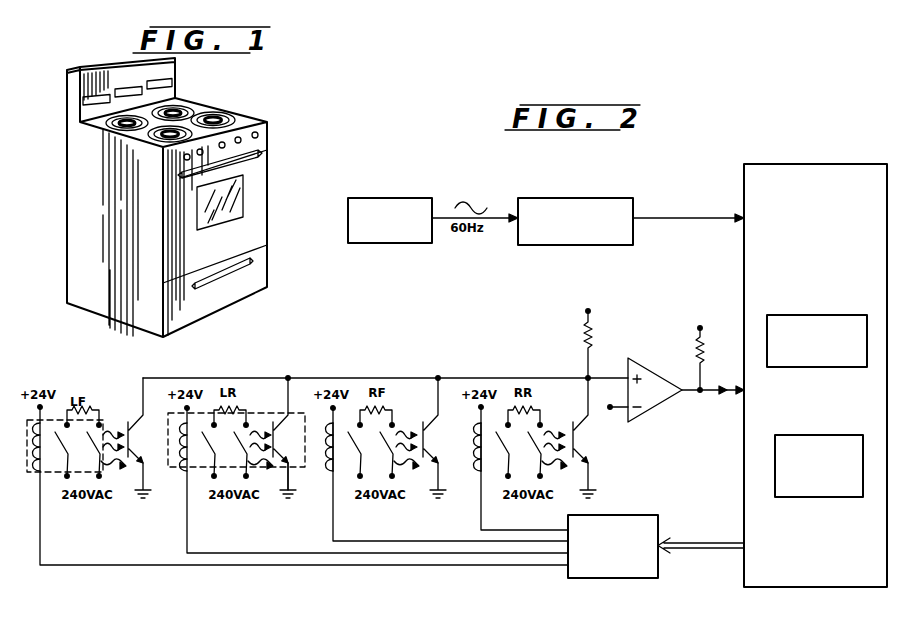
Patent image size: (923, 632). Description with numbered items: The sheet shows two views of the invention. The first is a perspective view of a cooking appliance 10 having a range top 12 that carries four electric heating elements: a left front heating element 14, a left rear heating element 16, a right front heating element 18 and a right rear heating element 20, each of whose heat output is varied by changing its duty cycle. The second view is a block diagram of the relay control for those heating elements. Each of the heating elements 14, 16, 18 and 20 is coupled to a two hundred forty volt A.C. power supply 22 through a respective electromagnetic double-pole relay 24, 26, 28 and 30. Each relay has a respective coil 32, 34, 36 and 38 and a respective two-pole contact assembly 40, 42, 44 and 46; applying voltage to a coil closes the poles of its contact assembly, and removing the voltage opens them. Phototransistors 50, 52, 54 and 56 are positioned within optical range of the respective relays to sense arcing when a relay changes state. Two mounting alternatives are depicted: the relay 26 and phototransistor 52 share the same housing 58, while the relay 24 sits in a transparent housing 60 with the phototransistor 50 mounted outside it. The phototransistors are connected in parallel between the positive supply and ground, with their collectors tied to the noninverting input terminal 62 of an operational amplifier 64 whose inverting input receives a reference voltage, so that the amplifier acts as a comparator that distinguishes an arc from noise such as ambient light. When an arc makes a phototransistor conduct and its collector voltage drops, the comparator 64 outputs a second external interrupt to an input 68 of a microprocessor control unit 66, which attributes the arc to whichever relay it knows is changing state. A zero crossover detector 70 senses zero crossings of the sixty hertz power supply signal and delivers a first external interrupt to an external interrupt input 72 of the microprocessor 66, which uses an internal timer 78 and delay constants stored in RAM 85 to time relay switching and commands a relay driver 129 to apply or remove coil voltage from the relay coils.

In FIG. 1, the cooking appliance 10 is at (194, 197).
In FIG. 1, the range top 12 is at (248, 115).
In FIG. 1, the left front heating element 14 is at (146, 138).
In FIG. 2, the left front heating element 14 is at (50, 411).
In FIG. 1, the left rear heating element 16 is at (110, 128).
In FIG. 2, the left rear heating element 16 is at (243, 405).
In FIG. 1, the right front heating element 18 is at (223, 116).
In FIG. 2, the right front heating element 18 is at (390, 405).
In FIG. 1, the right rear heating element 20 is at (178, 105).
In FIG. 2, the right rear heating element 20 is at (537, 404).
In FIG. 2, the power supply 22 is at (408, 199).
In FIG. 2, the left front relay 24 is at (46, 447).
In FIG. 2, the left rear relay 26 is at (193, 447).
In FIG. 2, the right front relay 28 is at (340, 447).
In FIG. 2, the right rear relay 30 is at (488, 447).
In FIG. 2, the coil 32 is at (53, 408).
In FIG. 2, the coil 34 is at (234, 453).
In FIG. 2, the coil 36 is at (319, 456).
In FIG. 2, the coil 38 is at (470, 453).
In FIG. 2, the contact assembly 40 is at (116, 458).
In FIG. 2, the contact assembly 42 is at (260, 458).
In FIG. 2, the contact assembly 44 is at (408, 458).
In FIG. 2, the contact assembly 46 is at (556, 458).
In FIG. 2, the phototransistor 50 is at (146, 438).
In FIG. 2, the phototransistor 52 is at (287, 438).
In FIG. 2, the phototransistor 54 is at (440, 438).
In FIG. 2, the phototransistor 56 is at (594, 438).
In FIG. 2, the housing 58 is at (273, 485).
In FIG. 2, the transparent housing 60 is at (61, 463).
In FIG. 2, the noninverting input terminal 62 is at (622, 377).
In FIG. 2, the operational amplifier 64 is at (657, 403).
In FIG. 2, the microprocessor control unit 66 is at (802, 275).
In FIG. 2, the input 68 is at (745, 393).
In FIG. 2, the zero crossover detector 70 is at (618, 240).
In FIG. 2, the external interrupt input 72 is at (744, 215).
In FIG. 2, the internal timer 78 is at (813, 367).
In FIG. 2, the RAM 85 is at (837, 497).
In FIG. 2, the relay driver 129 is at (635, 525).